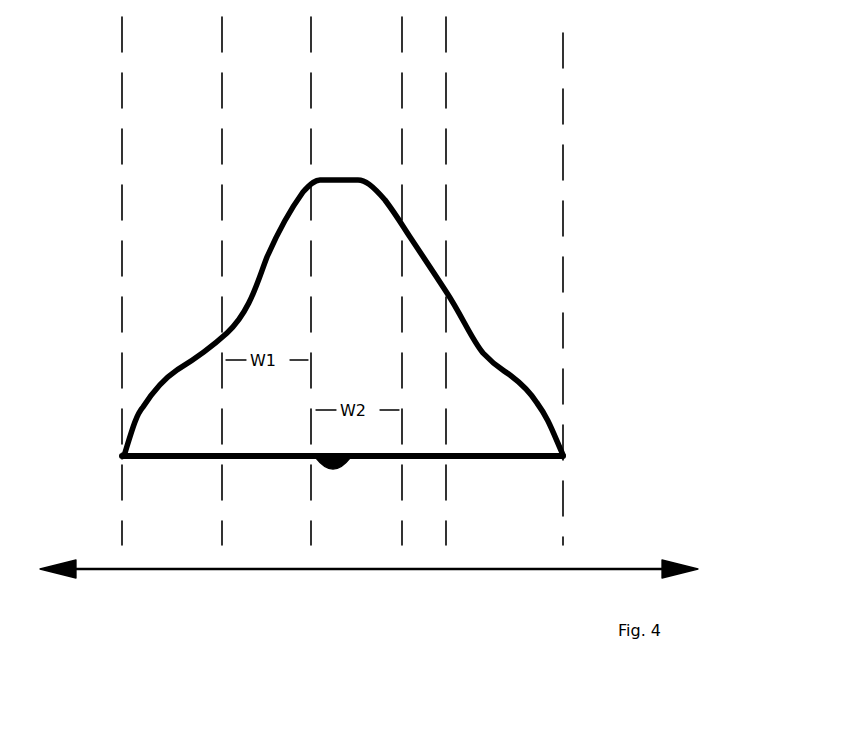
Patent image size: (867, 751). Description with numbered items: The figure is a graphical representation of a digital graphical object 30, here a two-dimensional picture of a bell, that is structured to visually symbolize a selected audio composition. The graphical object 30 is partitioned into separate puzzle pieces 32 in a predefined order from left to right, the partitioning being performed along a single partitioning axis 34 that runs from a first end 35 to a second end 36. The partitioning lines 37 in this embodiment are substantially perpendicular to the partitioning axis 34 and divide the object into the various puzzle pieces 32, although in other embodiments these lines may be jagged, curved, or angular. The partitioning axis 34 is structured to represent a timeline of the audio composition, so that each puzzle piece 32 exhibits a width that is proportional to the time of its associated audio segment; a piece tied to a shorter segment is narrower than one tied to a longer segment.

The graphical object 30 is at (620, 268).
The puzzle pieces 32 is at (349, 210).
The partitioning axis 34 is at (177, 570).
The first end 35 is at (122, 455).
The second end 36 is at (566, 452).
The partitioning lines 37 is at (311, 304).